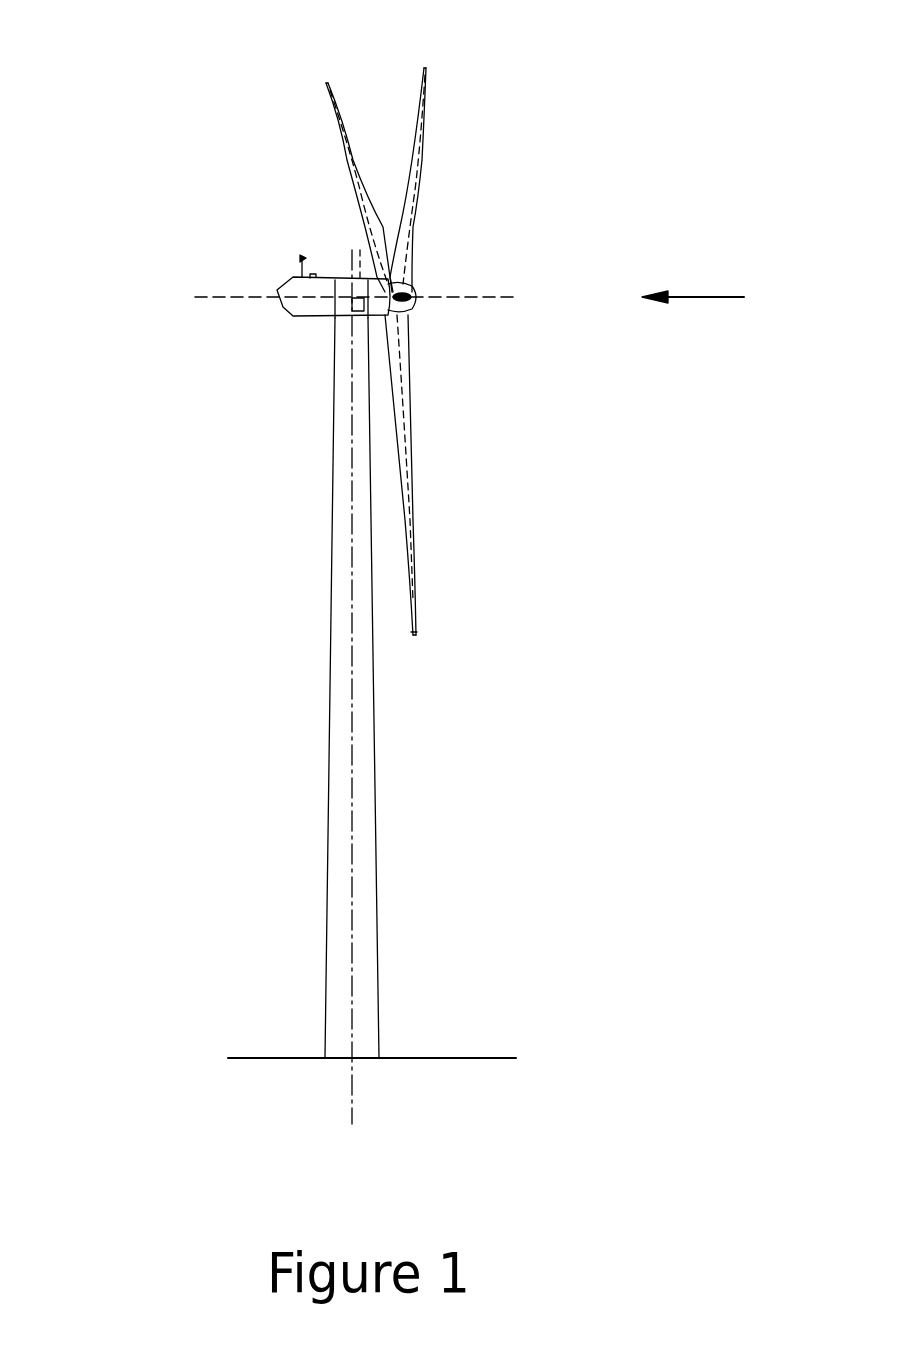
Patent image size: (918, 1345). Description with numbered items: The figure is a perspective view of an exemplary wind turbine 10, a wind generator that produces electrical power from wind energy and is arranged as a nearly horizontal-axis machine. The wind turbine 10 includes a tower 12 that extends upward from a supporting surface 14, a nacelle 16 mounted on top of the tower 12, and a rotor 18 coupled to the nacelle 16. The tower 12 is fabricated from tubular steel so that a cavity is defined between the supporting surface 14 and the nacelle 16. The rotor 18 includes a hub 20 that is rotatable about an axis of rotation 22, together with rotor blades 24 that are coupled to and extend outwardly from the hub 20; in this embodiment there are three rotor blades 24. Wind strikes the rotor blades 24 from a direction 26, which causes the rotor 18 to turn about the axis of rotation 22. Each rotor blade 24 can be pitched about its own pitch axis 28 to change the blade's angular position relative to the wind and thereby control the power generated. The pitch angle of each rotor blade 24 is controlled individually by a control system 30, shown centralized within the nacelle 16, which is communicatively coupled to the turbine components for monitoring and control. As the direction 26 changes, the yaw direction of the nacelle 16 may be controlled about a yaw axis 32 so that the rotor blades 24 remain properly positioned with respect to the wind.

The wind turbine 10 is at (117, 86).
The tower 12 is at (328, 835).
The supporting surface 14 is at (283, 1057).
The nacelle 16 is at (327, 320).
The rotor 18 is at (440, 202).
The hub 20 is at (415, 290).
The axis of rotation 22 is at (490, 299).
The rotor blade 24 is at (350, 152).
The direction 26 is at (706, 290).
The pitch axis 28 is at (326, 86).
The control system 30 is at (360, 262).
The yaw axis 32 is at (352, 757).